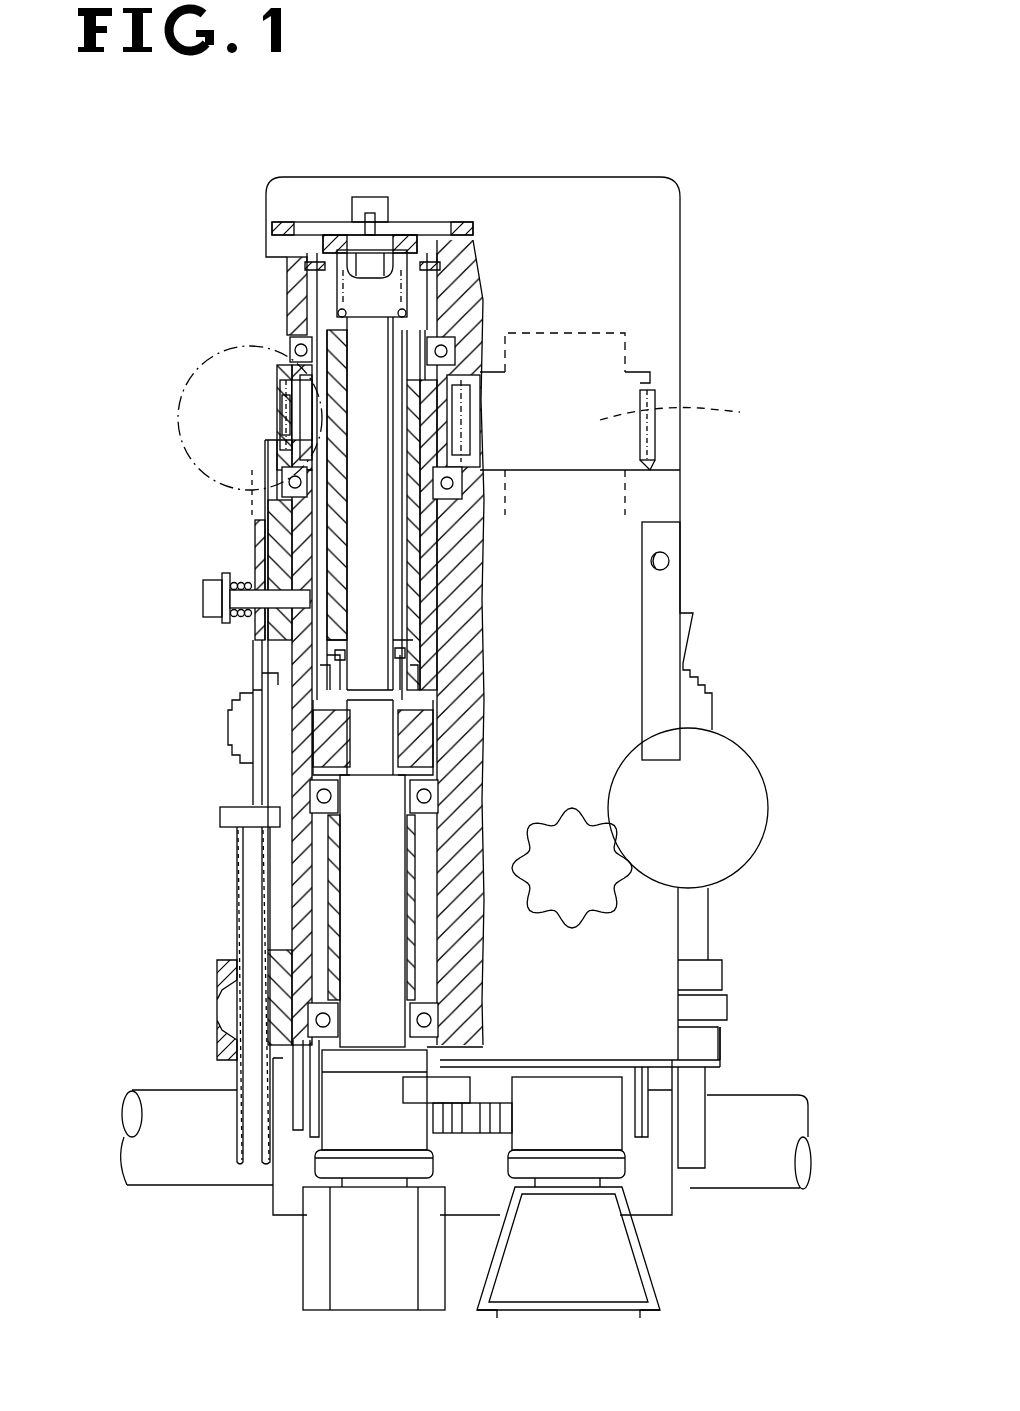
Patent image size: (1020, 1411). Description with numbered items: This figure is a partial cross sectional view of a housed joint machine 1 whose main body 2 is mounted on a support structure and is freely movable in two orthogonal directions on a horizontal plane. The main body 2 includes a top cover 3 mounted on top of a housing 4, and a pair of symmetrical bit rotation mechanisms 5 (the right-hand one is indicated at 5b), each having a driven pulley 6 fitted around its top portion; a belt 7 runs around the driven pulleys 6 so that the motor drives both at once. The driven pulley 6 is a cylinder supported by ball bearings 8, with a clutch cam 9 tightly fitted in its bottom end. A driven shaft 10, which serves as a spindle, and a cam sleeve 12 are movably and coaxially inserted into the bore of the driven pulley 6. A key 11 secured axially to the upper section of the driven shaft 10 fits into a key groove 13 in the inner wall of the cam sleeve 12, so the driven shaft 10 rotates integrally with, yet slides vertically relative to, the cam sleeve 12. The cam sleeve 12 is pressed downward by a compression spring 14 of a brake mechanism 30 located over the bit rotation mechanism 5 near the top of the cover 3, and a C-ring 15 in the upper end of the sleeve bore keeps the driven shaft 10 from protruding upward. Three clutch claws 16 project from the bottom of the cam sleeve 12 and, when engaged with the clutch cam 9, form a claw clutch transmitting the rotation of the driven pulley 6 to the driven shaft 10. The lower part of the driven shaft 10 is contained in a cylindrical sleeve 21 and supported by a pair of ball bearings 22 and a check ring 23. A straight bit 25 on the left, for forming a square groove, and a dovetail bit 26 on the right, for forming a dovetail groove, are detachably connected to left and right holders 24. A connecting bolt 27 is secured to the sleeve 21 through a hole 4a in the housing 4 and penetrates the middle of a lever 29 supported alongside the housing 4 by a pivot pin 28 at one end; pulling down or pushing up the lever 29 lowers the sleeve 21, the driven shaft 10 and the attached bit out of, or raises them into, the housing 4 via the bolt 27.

The housed joint machine 1 is at (558, 156).
The main body 2 is at (699, 505).
The top cover 3 is at (664, 312).
The housing 4 is at (618, 712).
The hole 4a is at (268, 795).
The bit rotation mechanism 5 is at (300, 330).
The cam 5b is at (640, 360).
The driven pulley 6 is at (300, 410).
The belt 7 is at (305, 440).
The ball bearings 8 is at (295, 345).
The clutch cam 9 is at (330, 738).
The driven shaft 10 is at (445, 290).
The key 11 is at (430, 345).
The cam sleeve 12 is at (300, 300).
The key groove 13 is at (420, 330).
The compression spring 14 is at (398, 238).
The C-ring 15 is at (338, 347).
The clutch claws 16 is at (335, 668).
The cylindrical sleeve 21 is at (295, 880).
The ball bearings 22 is at (318, 798).
The check ring 23 is at (297, 1040).
The holder 24 is at (335, 1133).
The straight bit 25 is at (366, 1290).
The dovetail bit 26 is at (567, 1290).
The connecting bolt 27 is at (212, 585).
The pivot pin 28 is at (232, 730).
The lever 29 is at (178, 428).
The brake mechanism 30 is at (333, 212).